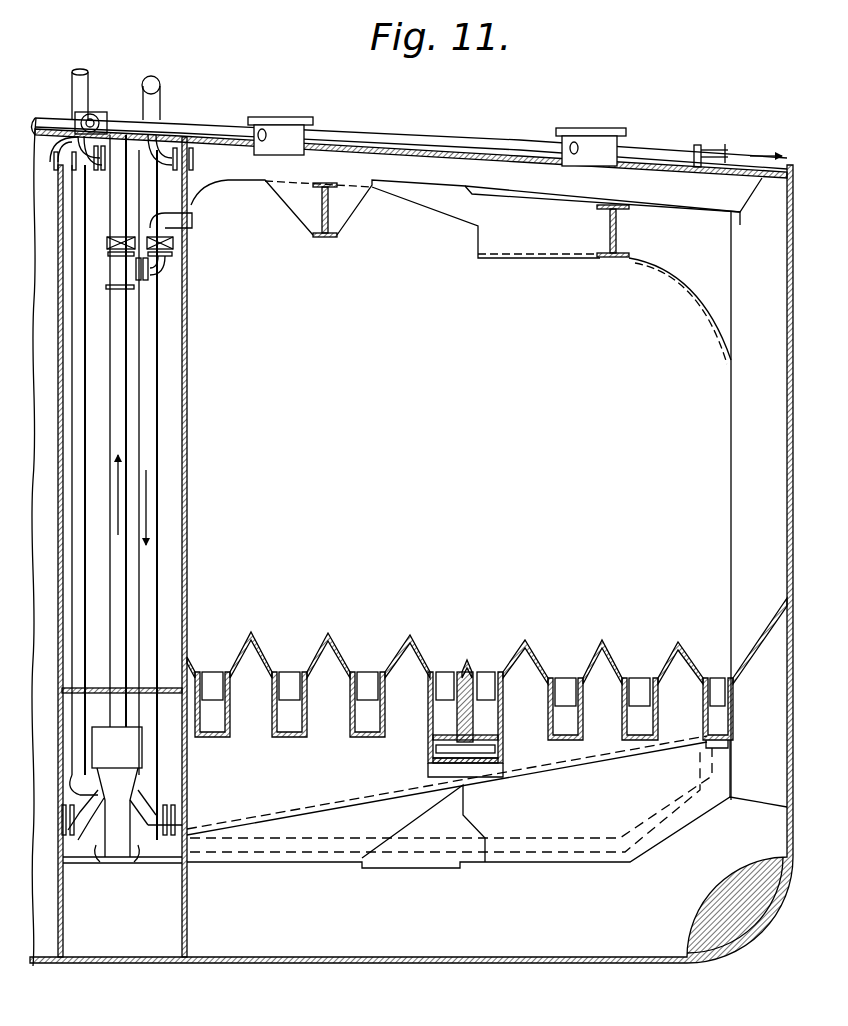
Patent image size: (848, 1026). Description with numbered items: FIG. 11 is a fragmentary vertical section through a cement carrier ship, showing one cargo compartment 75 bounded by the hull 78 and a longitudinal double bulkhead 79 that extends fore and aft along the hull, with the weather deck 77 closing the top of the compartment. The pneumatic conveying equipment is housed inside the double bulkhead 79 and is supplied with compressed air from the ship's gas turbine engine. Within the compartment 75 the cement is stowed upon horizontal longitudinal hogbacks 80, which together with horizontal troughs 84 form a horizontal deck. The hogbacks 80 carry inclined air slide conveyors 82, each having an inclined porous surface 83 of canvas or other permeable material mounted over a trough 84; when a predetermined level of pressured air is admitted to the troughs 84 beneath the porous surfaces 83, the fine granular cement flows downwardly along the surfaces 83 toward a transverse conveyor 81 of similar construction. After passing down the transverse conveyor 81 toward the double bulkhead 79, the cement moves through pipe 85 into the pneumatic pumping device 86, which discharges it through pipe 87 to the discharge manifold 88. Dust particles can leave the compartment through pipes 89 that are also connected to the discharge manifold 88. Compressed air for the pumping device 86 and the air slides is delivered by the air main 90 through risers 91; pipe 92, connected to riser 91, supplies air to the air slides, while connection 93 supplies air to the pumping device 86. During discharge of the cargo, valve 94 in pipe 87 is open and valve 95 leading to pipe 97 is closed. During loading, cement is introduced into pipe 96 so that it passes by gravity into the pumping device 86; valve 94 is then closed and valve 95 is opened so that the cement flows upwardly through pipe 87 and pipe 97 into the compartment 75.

The compartment 75 is at (462, 490).
The weather deck 77 is at (645, 174).
The hull 78 is at (400, 962).
The double bulkhead 79 is at (60, 512).
The hogback 80 is at (330, 644).
The transverse conveyor 81 is at (364, 802).
The inclined air slide conveyor 82 is at (282, 655).
The inclined porous surface 83 is at (288, 676).
The trough 84 is at (290, 737).
The pipe 85 is at (68, 834).
The pneumatic pumping device 86 is at (128, 756).
The pipe 87 is at (112, 624).
The discharge manifold 88 is at (462, 137).
The pipe 89 is at (46, 136).
The air main 90 is at (158, 84).
The riser 91 is at (162, 110).
The pipe 92 is at (525, 840).
The connection 93 is at (96, 864).
The valve 94 is at (108, 242).
The valve 95 is at (174, 244).
The pipe 96 is at (88, 84).
The pipe 97 is at (193, 220).